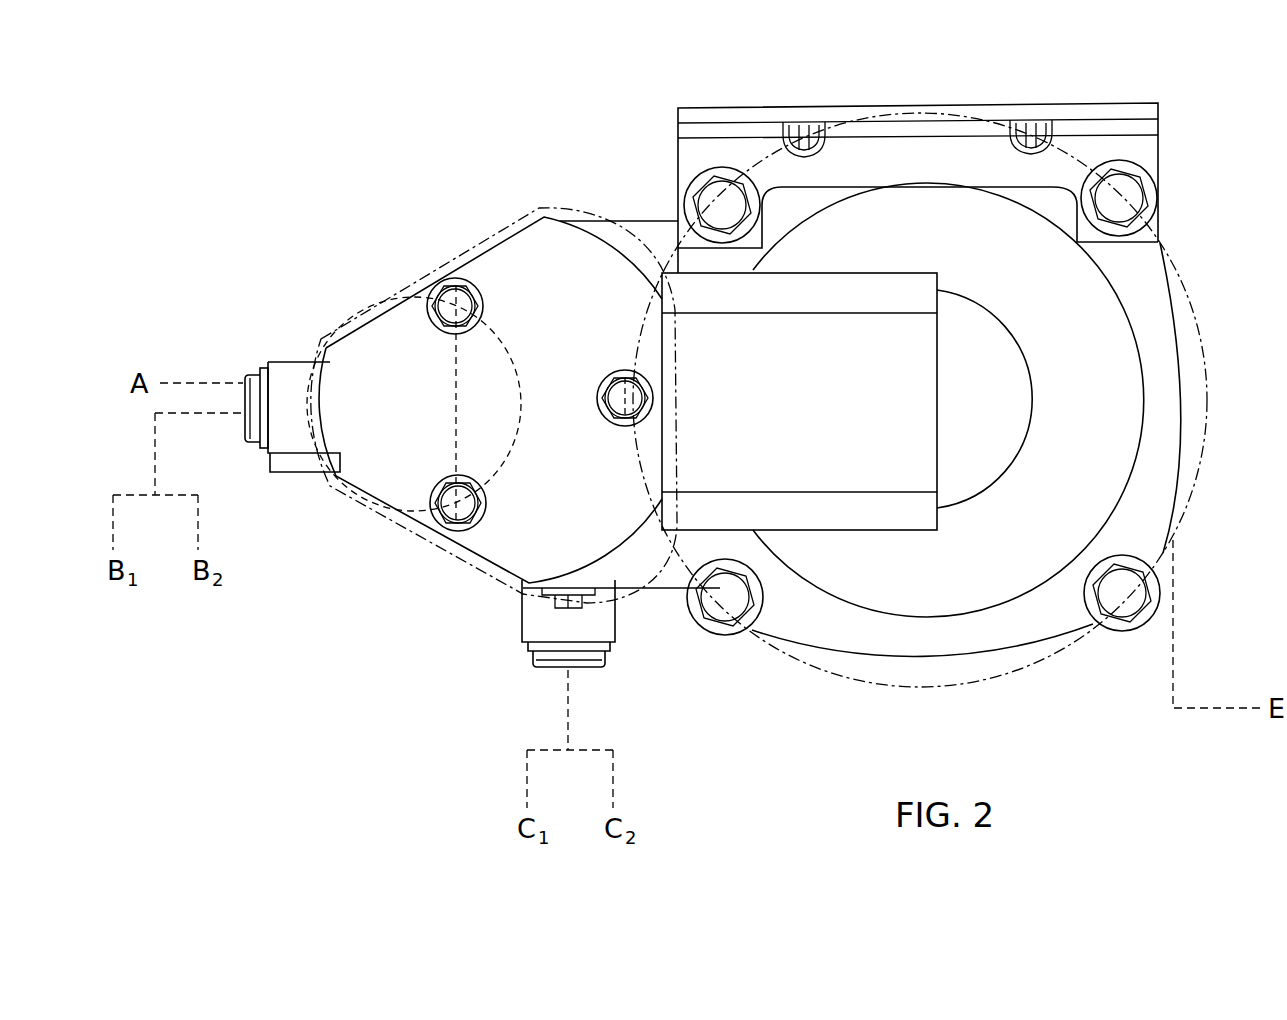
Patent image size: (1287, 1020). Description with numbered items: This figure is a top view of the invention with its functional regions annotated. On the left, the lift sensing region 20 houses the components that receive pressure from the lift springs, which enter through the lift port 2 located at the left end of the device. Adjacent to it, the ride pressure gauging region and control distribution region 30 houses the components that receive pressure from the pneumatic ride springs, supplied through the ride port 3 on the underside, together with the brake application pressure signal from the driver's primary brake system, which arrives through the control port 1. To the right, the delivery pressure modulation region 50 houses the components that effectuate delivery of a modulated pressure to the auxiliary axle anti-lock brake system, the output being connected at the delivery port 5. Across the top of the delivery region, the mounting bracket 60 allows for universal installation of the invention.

The control port 1 is at (242, 423).
The lift port 2 is at (252, 363).
The ride port 3 is at (588, 668).
The delivery port 5 is at (1173, 537).
The lift sensing region 20 is at (345, 325).
The ride pressure gauging region and control distribution region 30 is at (541, 205).
The delivery pressure modulation region 50 is at (1172, 257).
The mounting bracket 60 is at (1035, 103).